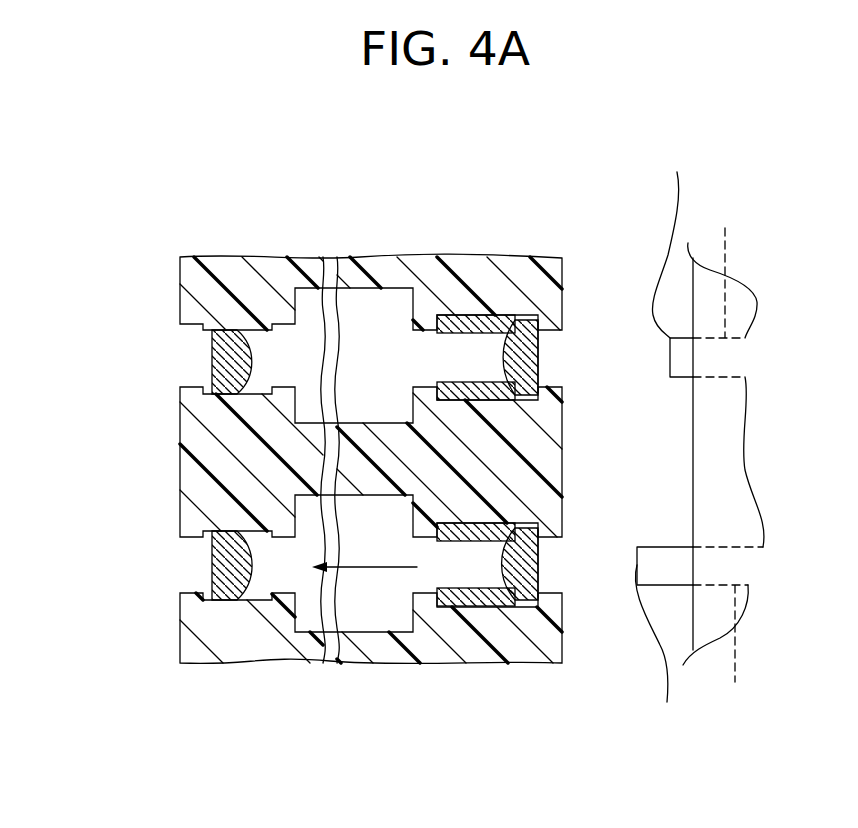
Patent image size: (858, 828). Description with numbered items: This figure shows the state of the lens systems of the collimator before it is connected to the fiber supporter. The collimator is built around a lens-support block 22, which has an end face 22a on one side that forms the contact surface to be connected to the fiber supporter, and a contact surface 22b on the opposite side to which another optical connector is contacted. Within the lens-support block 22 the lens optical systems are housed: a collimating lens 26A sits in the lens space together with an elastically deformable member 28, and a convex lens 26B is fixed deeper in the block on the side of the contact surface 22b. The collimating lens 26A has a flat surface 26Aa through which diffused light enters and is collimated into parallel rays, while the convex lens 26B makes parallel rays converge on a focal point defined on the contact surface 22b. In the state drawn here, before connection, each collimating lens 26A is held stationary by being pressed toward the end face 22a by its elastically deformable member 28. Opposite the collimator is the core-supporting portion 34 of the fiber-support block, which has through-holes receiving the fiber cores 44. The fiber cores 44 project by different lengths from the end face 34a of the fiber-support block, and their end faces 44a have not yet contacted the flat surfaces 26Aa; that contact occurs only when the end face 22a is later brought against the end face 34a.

The lens-support block 22 is at (357, 653).
The end face 22a is at (562, 473).
The contact surface 22b is at (180, 478).
The collimating lens 26A is at (518, 320).
The flat surface 26Aa is at (542, 357).
The convex lens 26B is at (224, 330).
The elastically deformable member 28 is at (452, 315).
The core-supporting portion 34 is at (703, 627).
The end face 34a is at (693, 424).
The fiber core 44 is at (728, 452).
The end face 44a is at (666, 436).